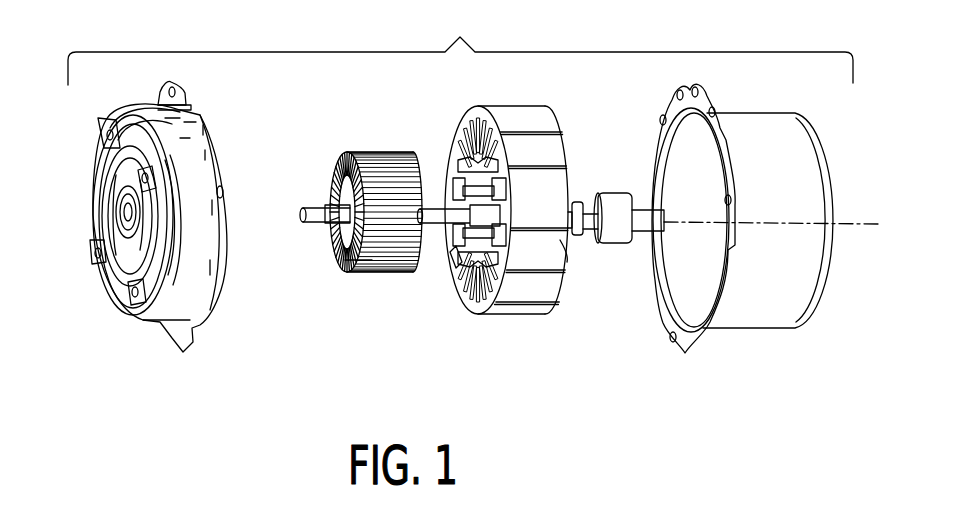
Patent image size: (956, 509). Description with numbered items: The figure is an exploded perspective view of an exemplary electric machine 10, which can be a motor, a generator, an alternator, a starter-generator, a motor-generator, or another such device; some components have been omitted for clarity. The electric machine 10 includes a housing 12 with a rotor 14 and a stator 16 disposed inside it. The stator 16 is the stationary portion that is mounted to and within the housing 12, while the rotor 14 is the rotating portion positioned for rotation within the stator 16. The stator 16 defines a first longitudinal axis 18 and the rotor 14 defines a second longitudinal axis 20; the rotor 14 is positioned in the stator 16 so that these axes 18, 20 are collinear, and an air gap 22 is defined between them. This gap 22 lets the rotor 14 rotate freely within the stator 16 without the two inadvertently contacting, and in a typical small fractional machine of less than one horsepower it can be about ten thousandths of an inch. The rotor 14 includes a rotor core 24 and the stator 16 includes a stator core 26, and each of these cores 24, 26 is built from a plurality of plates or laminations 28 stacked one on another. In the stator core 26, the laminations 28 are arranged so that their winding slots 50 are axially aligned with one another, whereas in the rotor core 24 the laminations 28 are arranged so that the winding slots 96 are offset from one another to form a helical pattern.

The electric machine 10 is at (460, 46).
The housing 12 is at (170, 304).
The rotor 14 is at (390, 262).
The stator 16 is at (528, 295).
The first longitudinal axis 18 is at (773, 218).
The second longitudinal axis 20 is at (773, 225).
The air gap 22 is at (460, 152).
The rotor core 24 is at (345, 228).
The stator core 26 is at (468, 258).
The laminations 28 is at (567, 260).
The winding slots 50 is at (455, 178).
The winding slots 96 is at (372, 262).